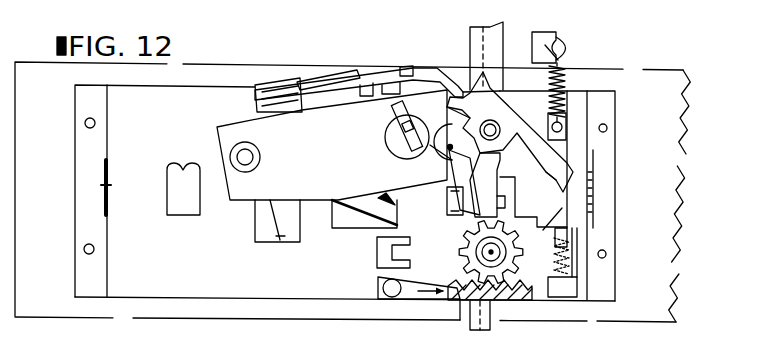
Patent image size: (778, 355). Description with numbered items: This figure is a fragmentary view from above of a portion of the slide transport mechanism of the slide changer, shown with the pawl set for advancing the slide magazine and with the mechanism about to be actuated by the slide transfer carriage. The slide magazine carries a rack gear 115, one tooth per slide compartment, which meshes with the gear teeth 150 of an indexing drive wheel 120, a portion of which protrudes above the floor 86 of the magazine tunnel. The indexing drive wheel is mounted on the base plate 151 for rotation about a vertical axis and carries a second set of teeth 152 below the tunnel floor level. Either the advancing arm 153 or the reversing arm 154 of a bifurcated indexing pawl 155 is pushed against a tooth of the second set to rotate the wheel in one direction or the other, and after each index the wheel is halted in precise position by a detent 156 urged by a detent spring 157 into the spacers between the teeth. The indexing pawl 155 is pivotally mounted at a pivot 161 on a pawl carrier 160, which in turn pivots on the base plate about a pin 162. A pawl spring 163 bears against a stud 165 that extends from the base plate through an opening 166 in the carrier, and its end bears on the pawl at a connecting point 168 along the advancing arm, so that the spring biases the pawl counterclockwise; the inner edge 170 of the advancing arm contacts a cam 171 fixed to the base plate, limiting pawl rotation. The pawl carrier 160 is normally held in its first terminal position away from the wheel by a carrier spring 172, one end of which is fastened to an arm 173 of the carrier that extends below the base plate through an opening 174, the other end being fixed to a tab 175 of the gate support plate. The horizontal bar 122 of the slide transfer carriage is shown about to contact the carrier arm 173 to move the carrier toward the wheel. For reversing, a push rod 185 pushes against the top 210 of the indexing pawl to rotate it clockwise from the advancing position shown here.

The floor 86 is at (267, 67).
The rack gear 115 is at (510, 293).
The indexing drive wheel 120 is at (457, 246).
The horizontal bar 122 is at (473, 43).
The gear teeth 150 is at (465, 262).
The base plate 151 is at (205, 83).
The second set of teeth 152 is at (572, 232).
The advancing arm 153 is at (447, 203).
The reversing arm 154 is at (568, 167).
The indexing pawl 155 is at (468, 112).
The detent 156 is at (497, 306).
The detent spring 157 is at (563, 285).
The pawl carrier 160 is at (309, 205).
The pivot 161 is at (489, 131).
The pin 162 is at (261, 153).
The pawl spring 163 is at (398, 158).
The stud 165 is at (388, 149).
The opening 166 is at (397, 103).
The connecting point 168 is at (448, 145).
The inner edge 170 is at (495, 176).
The cam 171 is at (493, 202).
The carrier spring 172 is at (573, 73).
The arm 173 is at (568, 133).
The opening 174 is at (562, 208).
The tab 175 is at (549, 36).
The push rod 185 is at (376, 72).
The top 210 is at (484, 85).